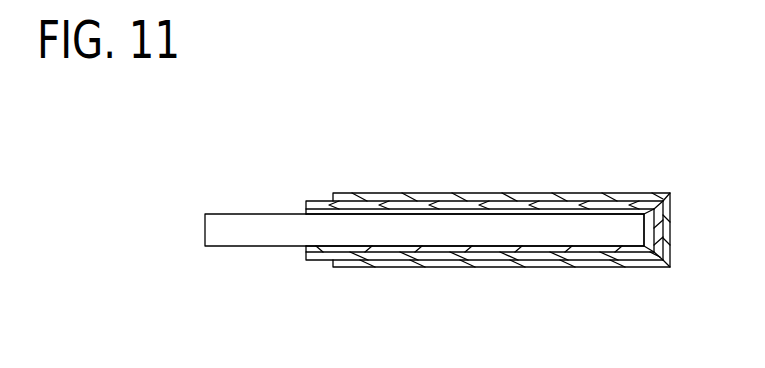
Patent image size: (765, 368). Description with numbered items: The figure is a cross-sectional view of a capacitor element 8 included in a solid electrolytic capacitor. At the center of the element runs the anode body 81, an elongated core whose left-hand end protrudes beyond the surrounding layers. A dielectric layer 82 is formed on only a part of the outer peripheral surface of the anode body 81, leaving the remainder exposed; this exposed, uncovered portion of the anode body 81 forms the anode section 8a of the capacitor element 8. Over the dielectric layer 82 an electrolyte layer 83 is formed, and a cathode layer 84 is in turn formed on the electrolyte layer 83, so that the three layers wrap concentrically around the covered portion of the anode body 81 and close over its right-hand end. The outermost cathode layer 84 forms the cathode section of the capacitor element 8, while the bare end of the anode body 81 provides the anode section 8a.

The capacitor element 8 is at (622, 140).
The anode section 8a is at (243, 233).
The anode body 81 is at (419, 227).
The dielectric layer 82 is at (468, 213).
The electrolyte layer 83 is at (520, 205).
The cathode layer 84 is at (579, 200).